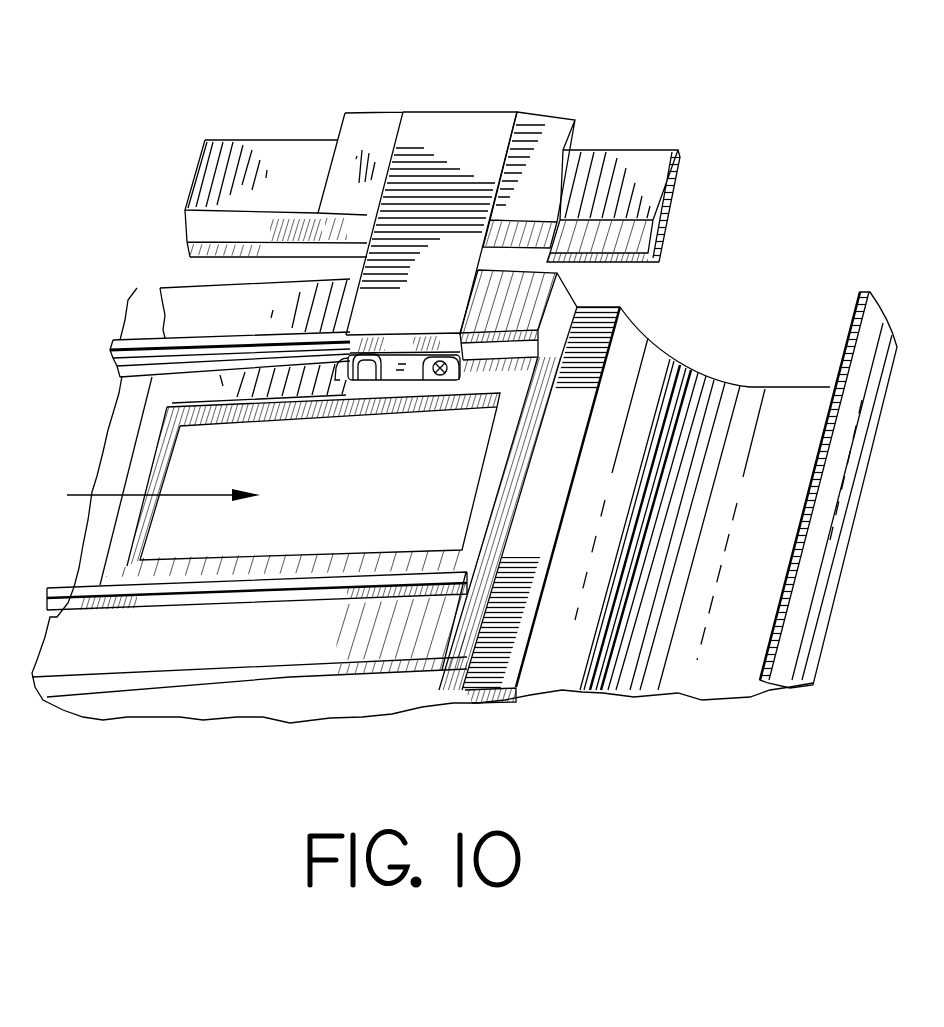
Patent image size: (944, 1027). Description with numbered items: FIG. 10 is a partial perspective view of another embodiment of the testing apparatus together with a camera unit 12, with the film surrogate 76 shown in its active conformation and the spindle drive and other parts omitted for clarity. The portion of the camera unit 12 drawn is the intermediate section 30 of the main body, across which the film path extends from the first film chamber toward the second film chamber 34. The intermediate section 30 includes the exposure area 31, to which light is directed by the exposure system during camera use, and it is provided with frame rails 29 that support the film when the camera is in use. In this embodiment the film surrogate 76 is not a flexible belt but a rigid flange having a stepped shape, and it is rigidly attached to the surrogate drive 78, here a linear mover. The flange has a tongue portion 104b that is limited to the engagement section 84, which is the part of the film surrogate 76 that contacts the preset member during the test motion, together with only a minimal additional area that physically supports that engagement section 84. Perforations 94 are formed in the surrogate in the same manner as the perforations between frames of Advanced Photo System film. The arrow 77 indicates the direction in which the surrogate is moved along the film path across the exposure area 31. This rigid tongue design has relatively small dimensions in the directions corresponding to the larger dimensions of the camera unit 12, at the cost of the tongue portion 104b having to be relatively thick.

The film surrogate 76 is at (392, 128).
The surrogate drive 78 is at (556, 113).
The frame rails 29 is at (158, 288).
The intermediate section 30 is at (122, 424).
The perforations 94 is at (370, 345).
The tongue portion 104b is at (338, 375).
The engagement section 84 is at (382, 392).
The direction arrow / light path 77 is at (193, 497).
The exposure area 31 is at (330, 520).
The second film chamber 34 is at (738, 395).
The camera unit 12 is at (847, 572).